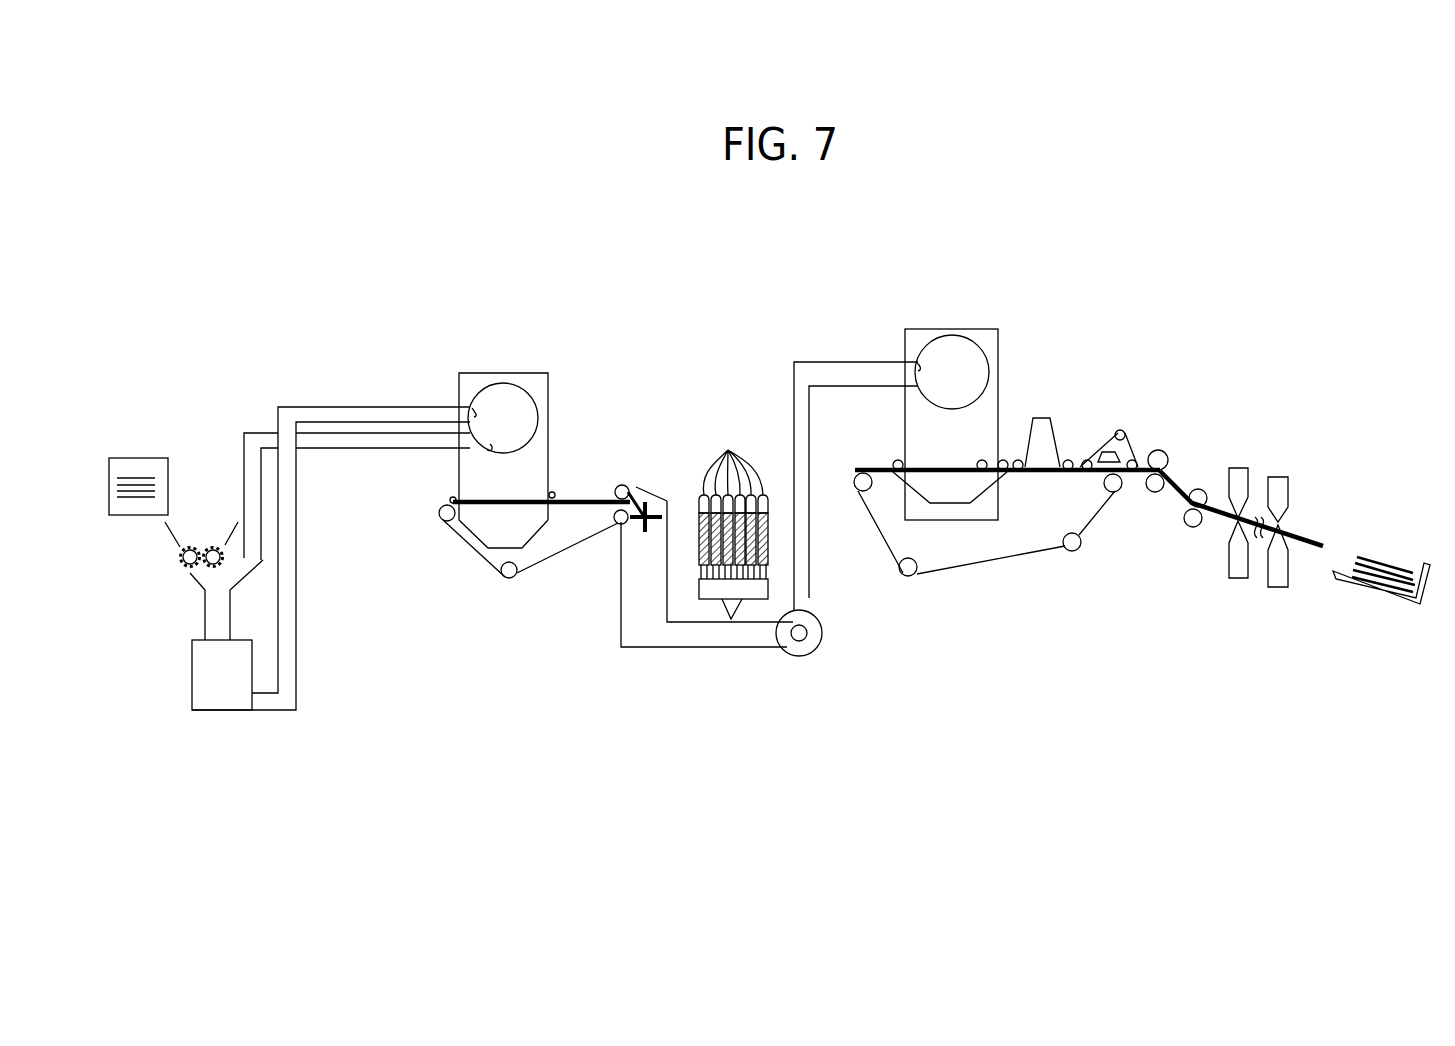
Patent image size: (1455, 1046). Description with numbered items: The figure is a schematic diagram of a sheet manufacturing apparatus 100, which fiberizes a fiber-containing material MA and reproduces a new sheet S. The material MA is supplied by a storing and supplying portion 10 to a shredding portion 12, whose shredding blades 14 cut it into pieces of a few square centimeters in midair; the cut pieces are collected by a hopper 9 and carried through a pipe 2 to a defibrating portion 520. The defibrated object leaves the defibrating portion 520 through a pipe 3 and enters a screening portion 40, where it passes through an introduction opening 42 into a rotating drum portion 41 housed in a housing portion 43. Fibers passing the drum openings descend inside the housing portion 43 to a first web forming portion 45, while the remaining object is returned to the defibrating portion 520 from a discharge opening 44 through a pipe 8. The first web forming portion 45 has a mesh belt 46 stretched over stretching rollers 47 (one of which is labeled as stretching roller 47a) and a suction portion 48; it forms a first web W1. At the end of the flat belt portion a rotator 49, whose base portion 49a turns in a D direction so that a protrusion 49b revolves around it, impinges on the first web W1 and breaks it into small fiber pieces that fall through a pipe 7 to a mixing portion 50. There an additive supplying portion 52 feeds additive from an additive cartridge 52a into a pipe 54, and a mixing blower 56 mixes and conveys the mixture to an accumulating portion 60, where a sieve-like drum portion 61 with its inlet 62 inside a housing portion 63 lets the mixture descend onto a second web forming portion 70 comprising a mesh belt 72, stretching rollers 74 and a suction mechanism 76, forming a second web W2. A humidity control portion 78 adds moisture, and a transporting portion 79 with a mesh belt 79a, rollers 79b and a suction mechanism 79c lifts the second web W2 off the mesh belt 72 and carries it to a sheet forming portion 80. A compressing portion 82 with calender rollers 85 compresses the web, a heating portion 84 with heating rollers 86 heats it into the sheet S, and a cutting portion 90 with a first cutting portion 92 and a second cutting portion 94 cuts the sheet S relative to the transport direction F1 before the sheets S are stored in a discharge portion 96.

The sheet manufacturing apparatus 100 is at (720, 237).
The material MA is at (132, 477).
The storing and supplying portion 10 is at (158, 457).
The shredding portion 12 is at (164, 559).
The shredding blades 14 is at (188, 564).
The hopper 9 is at (200, 574).
The pipe 2 is at (205, 625).
The defibrating portion 520 is at (190, 721).
The pipe 3 is at (297, 688).
The pipe 8 is at (250, 432).
The screening portion 40 is at (510, 482).
The drum portion 41 is at (487, 388).
The introduction opening 42 is at (476, 412).
The housing portion 43 is at (533, 372).
The discharge opening 44 is at (492, 447).
The suction portion 48 is at (488, 561).
The first web forming portion 45 is at (485, 546).
The mesh belt 46 is at (472, 553).
The stretching rollers 47 is at (440, 512).
The tension roller 47a is at (615, 524).
The first web W1 is at (473, 500).
The rotator 49 is at (628, 443).
The base portion 49a is at (645, 510).
The protrusion 49b is at (630, 494).
The D direction D is at (658, 538).
The pipe 7 is at (627, 635).
The mixing portion 50 is at (797, 528).
The additive supplying portion 52 is at (712, 397).
The additive cartridge 52a is at (733, 458).
The pipe 54 is at (805, 361).
The mixing blower 56 is at (797, 656).
The accumulating portion 60 is at (962, 394).
The drum portion 61 is at (928, 343).
The inlet 62 is at (920, 365).
The housing portion 63 is at (980, 328).
The second web forming portion 70 is at (1081, 562).
The mesh belt 72 is at (883, 473).
The stretching rollers 74 is at (862, 492).
The suction mechanism 76 is at (978, 507).
The second web W2 is at (987, 477).
The humidity control portion 78 is at (1035, 418).
The transporting portion 79 is at (1132, 380).
The mesh belt 79a is at (1091, 400).
The rollers 79b is at (1127, 436).
The suction mechanism 79c is at (1110, 440).
The sheet forming portion 80 is at (1214, 472).
The compressing portion 82 is at (1173, 442).
The heating portion 84 is at (1203, 484).
The calender rollers 85 is at (1145, 478).
The heating rollers 86 is at (1185, 513).
The cutting portion 90 is at (1231, 597).
The first cutting portion 92 is at (1223, 567).
The second cutting portion 94 is at (1258, 583).
The transport direction F1 is at (1355, 533).
The sheet S is at (1392, 563).
The discharge portion 96 is at (1425, 563).